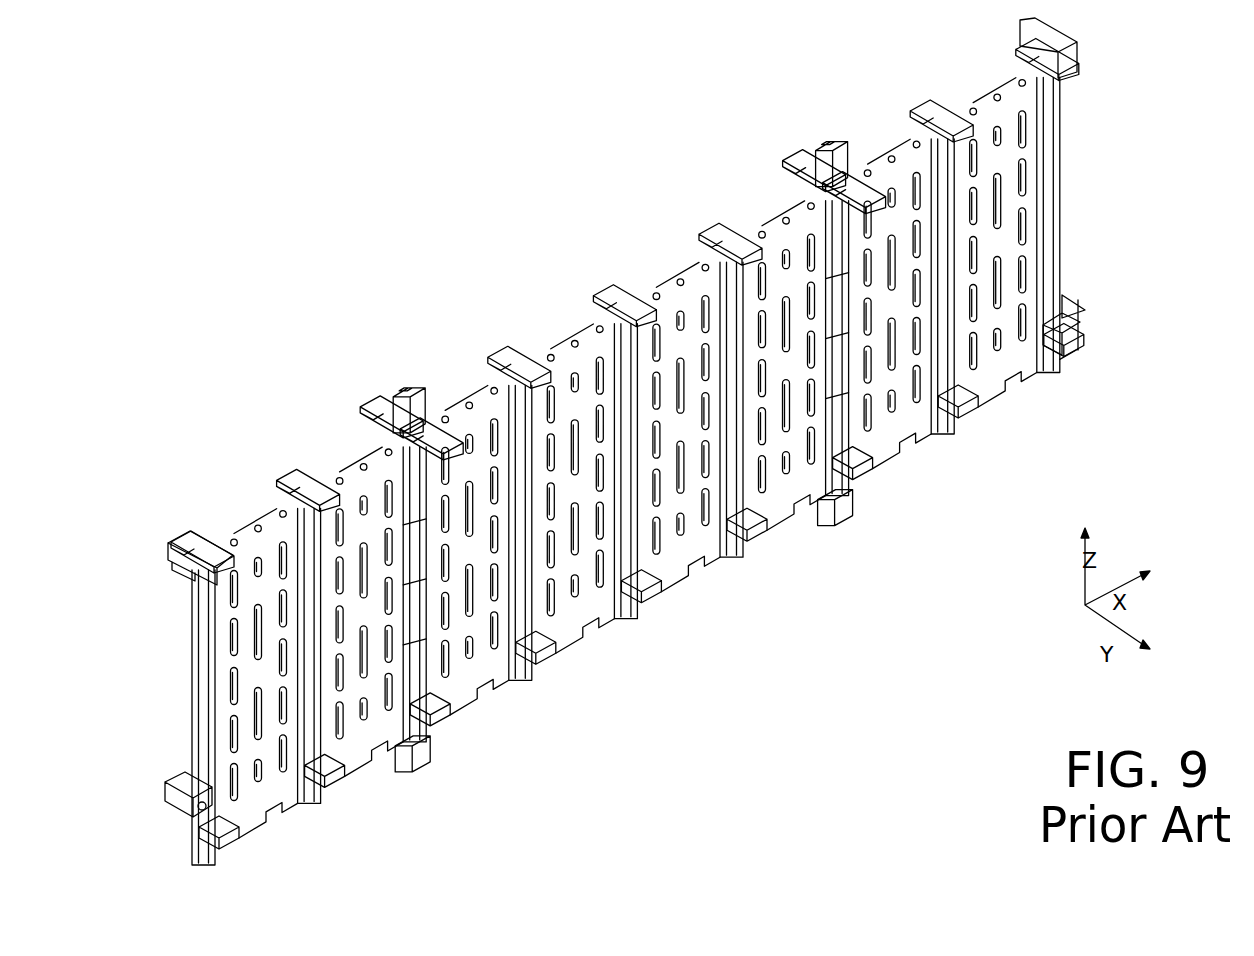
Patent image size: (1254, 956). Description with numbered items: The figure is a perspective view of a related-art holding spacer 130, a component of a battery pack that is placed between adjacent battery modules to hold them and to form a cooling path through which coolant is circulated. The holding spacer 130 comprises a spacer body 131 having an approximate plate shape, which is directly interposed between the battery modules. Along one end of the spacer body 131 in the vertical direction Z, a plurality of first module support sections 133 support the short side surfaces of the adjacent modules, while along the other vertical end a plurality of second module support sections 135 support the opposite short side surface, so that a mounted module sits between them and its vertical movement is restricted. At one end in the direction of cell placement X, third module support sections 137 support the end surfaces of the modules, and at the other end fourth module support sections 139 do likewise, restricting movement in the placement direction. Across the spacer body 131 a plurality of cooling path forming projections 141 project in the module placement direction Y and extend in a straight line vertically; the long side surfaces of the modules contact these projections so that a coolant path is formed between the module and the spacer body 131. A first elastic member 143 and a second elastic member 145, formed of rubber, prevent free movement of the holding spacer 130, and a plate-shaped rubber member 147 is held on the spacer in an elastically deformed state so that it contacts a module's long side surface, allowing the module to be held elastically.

The holding spacer 130 is at (617, 441).
The spacer body 131 is at (245, 649).
The first module support section 133 is at (205, 540).
The second module support section 135 is at (235, 836).
The third module support section 137 is at (172, 568).
The fourth module support section 139 is at (1077, 46).
The cooling path forming projection 141 is at (1032, 155).
The first elastic member 143 is at (405, 392).
The second elastic member 145 is at (428, 762).
The rubber member 147 is at (418, 528).